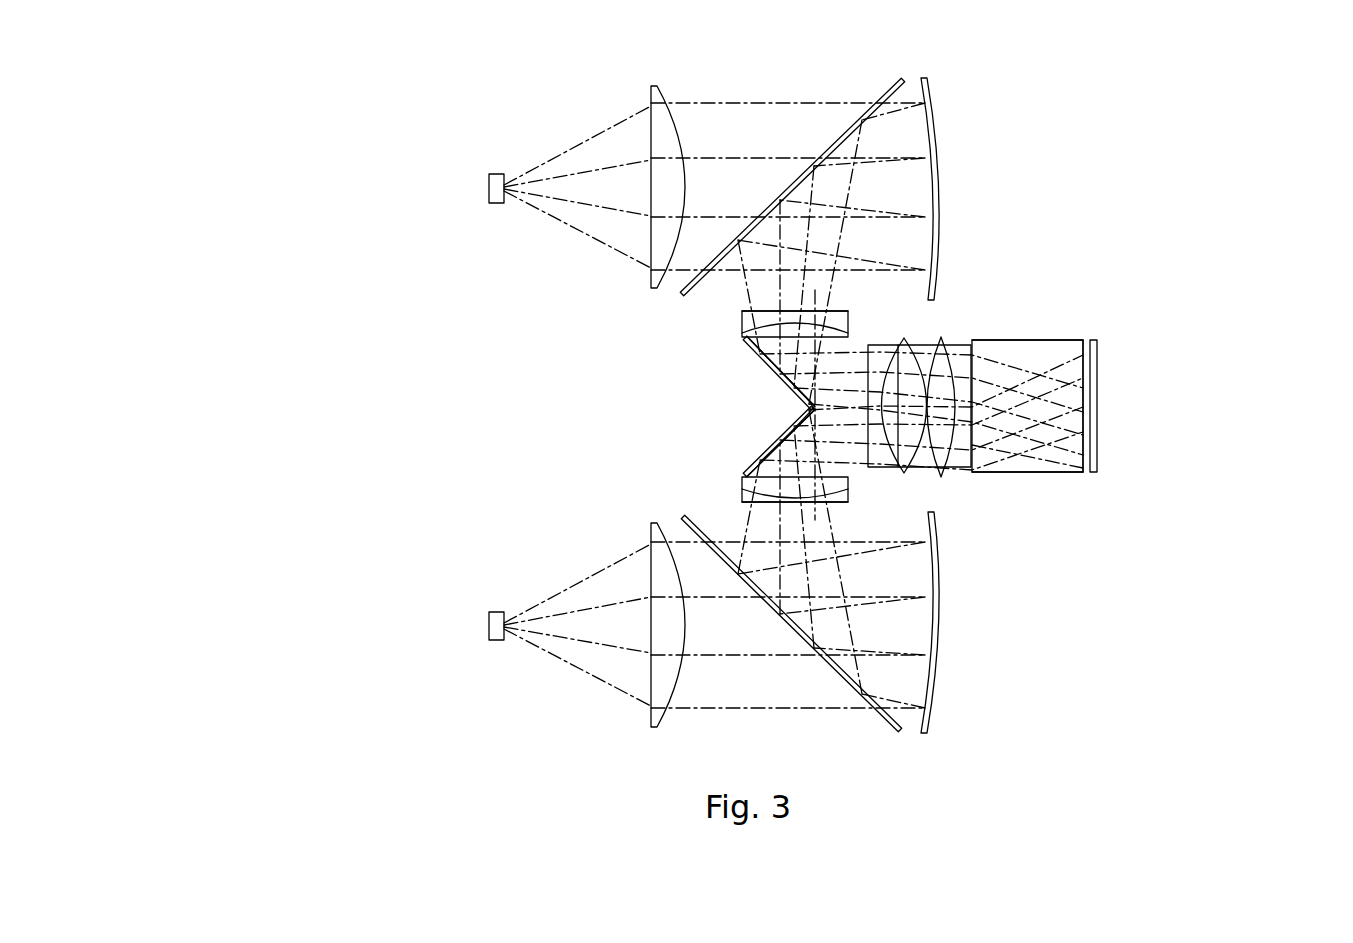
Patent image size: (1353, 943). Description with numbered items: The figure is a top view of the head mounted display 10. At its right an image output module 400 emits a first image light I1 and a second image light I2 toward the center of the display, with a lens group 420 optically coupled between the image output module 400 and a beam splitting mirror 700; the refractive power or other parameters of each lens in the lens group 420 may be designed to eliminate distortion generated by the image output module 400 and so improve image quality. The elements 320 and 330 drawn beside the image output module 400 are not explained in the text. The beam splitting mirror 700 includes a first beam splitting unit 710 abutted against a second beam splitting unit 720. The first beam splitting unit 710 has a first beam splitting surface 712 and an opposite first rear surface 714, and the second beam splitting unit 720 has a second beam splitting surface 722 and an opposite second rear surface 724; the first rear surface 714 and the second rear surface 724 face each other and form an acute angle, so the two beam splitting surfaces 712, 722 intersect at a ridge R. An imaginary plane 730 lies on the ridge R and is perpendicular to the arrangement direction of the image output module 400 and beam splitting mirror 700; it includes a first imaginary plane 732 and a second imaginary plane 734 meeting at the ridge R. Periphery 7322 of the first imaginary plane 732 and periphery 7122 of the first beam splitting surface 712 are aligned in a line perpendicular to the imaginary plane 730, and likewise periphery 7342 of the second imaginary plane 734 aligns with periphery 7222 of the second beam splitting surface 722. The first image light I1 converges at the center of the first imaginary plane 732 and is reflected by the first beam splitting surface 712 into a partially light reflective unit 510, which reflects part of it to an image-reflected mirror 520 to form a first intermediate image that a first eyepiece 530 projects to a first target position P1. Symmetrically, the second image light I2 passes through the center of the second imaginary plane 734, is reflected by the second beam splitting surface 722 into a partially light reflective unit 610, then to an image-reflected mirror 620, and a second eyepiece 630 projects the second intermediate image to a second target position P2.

The head mounted display 10 is at (209, 54).
The first target position P1 is at (489, 188).
The second target position P2 is at (489, 628).
The first eyepiece 530 is at (657, 95).
The partially light reflective unit 510 is at (890, 90).
The image-reflected mirror 520 is at (936, 115).
The second eyepiece 630 is at (657, 722).
The partially light reflective unit 610 is at (888, 730).
The image-reflected mirror 620 is at (937, 618).
The imaginary plane 730 is at (1037, 314).
The first imaginary plane 732 is at (849, 330).
The periphery 7322 is at (822, 314).
The second imaginary plane 734 is at (849, 500).
The periphery 7342 is at (845, 503).
The beam splitting mirror 700 is at (749, 415).
The first beam splitting unit 710 is at (746, 343).
The periphery 7122 is at (743, 334).
The first beam splitting surface 712 is at (808, 386).
The first rear surface 714 is at (775, 375).
The second beam splitting unit 720 is at (745, 476).
The periphery 7222 is at (743, 478).
The second beam splitting surface 722 is at (818, 455).
The second rear surface 724 is at (775, 435).
The ridge R is at (816, 408).
The lens group 420 is at (967, 334).
The light valve module 320 is at (1017, 472).
The light valve 330 is at (1030, 345).
The image output module 400 is at (1097, 365).
The first image light I1 is at (1048, 443).
The second image light I2 is at (1073, 355).